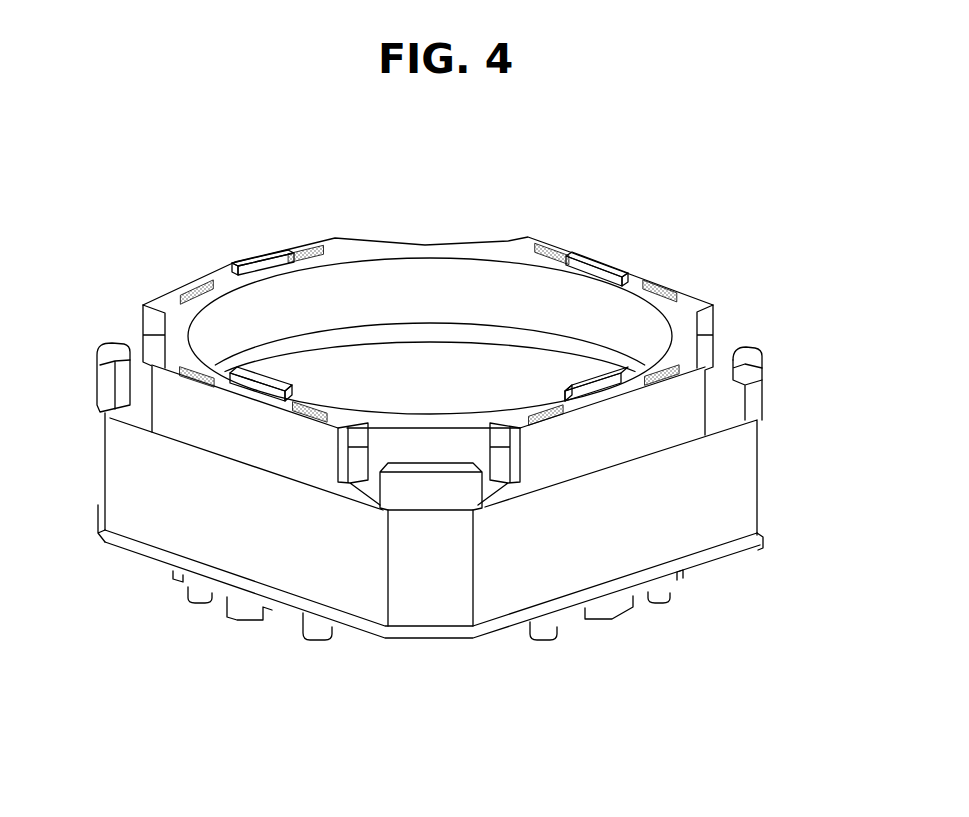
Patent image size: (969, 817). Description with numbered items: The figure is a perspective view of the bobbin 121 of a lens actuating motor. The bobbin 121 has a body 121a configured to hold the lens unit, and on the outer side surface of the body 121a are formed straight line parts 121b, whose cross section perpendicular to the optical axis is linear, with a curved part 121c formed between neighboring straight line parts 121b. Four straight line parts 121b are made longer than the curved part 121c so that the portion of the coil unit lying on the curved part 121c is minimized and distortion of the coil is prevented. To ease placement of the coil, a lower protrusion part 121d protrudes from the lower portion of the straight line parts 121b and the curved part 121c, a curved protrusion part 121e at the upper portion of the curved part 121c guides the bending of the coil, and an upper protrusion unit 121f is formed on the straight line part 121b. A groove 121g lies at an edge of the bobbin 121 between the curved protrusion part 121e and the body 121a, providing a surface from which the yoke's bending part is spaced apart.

The bobbin 121 is at (143, 263).
The body 121a is at (438, 280).
The straight line part 121b is at (715, 483).
The curved part 121c is at (450, 590).
The lower protrusion part 121d is at (727, 552).
The curved protrusion part 121e is at (423, 495).
The upper protrusion unit 121f is at (683, 415).
The groove 121g is at (137, 373).